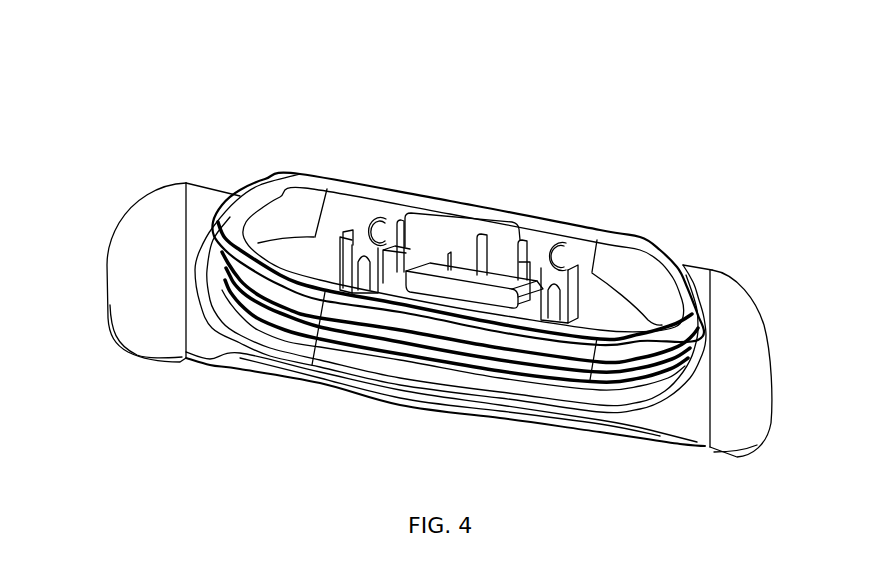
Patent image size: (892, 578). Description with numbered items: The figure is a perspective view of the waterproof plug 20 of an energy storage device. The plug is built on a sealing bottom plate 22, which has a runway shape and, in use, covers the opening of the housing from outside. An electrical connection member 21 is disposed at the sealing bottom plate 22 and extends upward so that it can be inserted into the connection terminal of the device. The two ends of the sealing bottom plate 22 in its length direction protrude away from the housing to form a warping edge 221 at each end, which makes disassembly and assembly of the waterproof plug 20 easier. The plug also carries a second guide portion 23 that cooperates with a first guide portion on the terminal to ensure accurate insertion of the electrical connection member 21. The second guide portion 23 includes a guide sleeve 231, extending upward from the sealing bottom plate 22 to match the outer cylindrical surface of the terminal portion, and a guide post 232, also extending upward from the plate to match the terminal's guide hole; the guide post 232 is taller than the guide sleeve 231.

The waterproof plug 20 is at (125, 41).
The electrical connection member 21 is at (452, 252).
The sealing bottom plate 22 is at (218, 347).
The warping edge 221 is at (732, 422).
The second guide portion 23 is at (645, 166).
The guide sleeve 231 is at (551, 250).
The guide post 232 is at (525, 240).